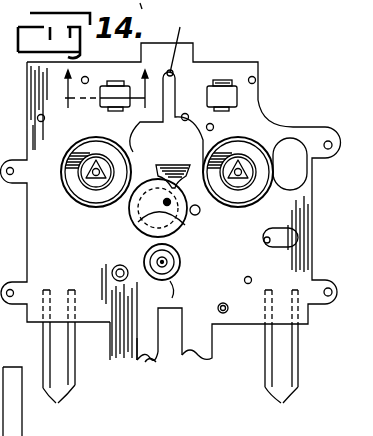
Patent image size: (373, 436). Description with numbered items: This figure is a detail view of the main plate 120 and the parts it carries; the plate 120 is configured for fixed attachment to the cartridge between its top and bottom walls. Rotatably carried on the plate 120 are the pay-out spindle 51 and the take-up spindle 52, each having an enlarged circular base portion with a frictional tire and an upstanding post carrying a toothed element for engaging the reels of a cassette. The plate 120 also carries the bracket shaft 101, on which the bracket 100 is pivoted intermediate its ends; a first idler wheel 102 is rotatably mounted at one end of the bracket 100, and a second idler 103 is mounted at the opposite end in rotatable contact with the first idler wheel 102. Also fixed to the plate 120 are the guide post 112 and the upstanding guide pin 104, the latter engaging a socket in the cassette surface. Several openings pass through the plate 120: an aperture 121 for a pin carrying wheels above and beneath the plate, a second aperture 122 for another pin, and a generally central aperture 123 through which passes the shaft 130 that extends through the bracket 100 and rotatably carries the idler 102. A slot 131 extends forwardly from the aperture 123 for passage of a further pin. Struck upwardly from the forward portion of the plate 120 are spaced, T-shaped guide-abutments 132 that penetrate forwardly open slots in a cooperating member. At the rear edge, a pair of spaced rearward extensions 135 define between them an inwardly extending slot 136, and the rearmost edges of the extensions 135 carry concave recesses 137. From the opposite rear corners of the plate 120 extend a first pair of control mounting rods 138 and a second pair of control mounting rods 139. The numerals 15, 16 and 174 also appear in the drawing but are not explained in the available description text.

The direction arrows 15 is at (104, 104).
The terminal finger 16 is at (12, 345).
The pay-out spindle 51 is at (85, 200).
The take-up spindle 52 is at (256, 199).
The bracket 100 is at (212, 268).
The bracket shaft 101 is at (180, 248).
The first idler wheel 102 is at (168, 165).
The second idler 103 is at (157, 296).
The guide pin 104 is at (110, 270).
The guide post 112 is at (197, 216).
The main plate 120 is at (266, 113).
The aperture 121 is at (288, 138).
The second aperture 122 is at (275, 248).
The central aperture 123 is at (222, 82).
The shaft 130 is at (138, 234).
The slot 131 is at (185, 117).
The T-shaped guide-abutments 132 is at (115, 82).
The rearward extensions 135 is at (137, 338).
The slot 136 is at (165, 370).
The concave recesses 137 is at (152, 366).
The first pair of control mounting rods 138 is at (65, 358).
The second pair of control mounting rods 139 is at (289, 356).
The connecting member 174 is at (155, 13).